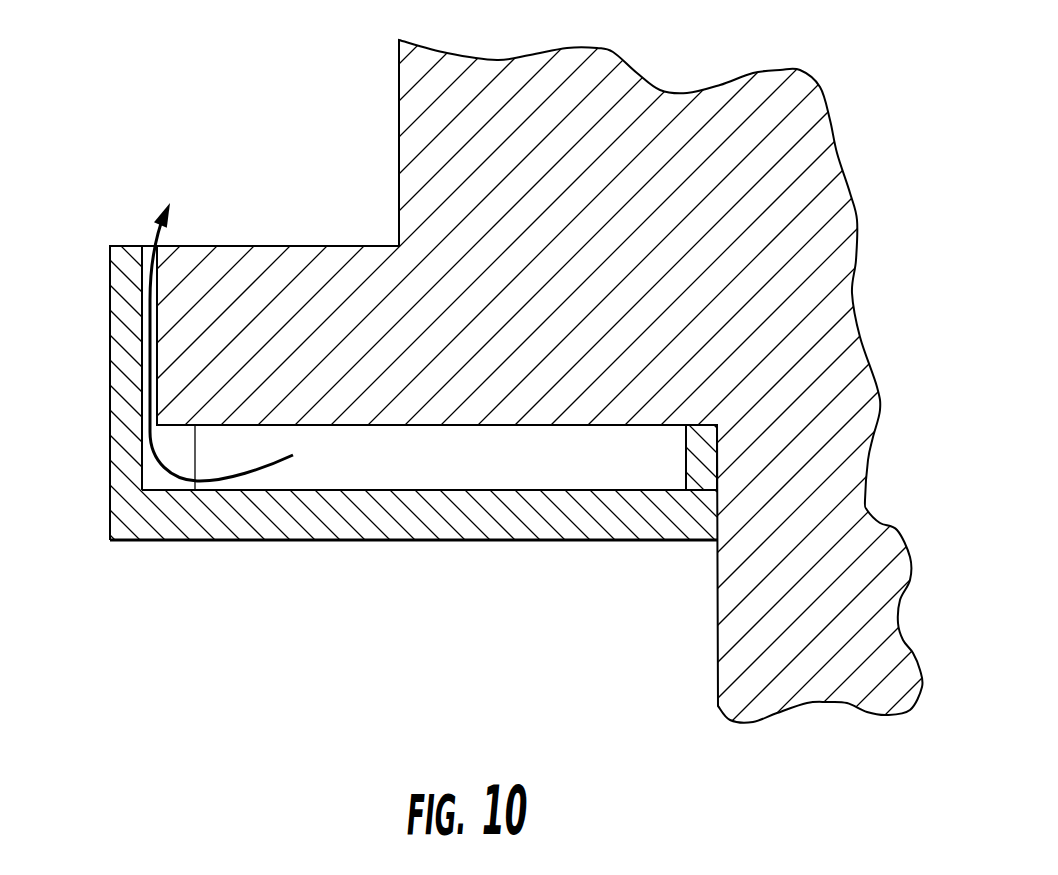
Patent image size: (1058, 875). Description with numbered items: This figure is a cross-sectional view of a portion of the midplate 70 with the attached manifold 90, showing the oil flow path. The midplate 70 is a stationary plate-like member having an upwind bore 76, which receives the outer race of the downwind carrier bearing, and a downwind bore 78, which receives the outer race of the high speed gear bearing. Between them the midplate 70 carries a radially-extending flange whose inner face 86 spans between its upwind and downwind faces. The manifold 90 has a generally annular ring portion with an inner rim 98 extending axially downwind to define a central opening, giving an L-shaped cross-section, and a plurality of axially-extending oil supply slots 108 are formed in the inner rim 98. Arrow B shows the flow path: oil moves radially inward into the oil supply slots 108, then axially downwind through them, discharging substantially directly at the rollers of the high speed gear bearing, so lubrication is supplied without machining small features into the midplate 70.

The midplate 70 is at (781, 85).
The downwind bore 78 is at (381, 97).
The upwind bore 76 is at (701, 652).
The inner face 86 is at (160, 280).
The inner rim 98 is at (124, 352).
The manifold 90 is at (263, 532).
The oil supply slots 108 is at (142, 483).
The oil flow path arrow B is at (150, 238).